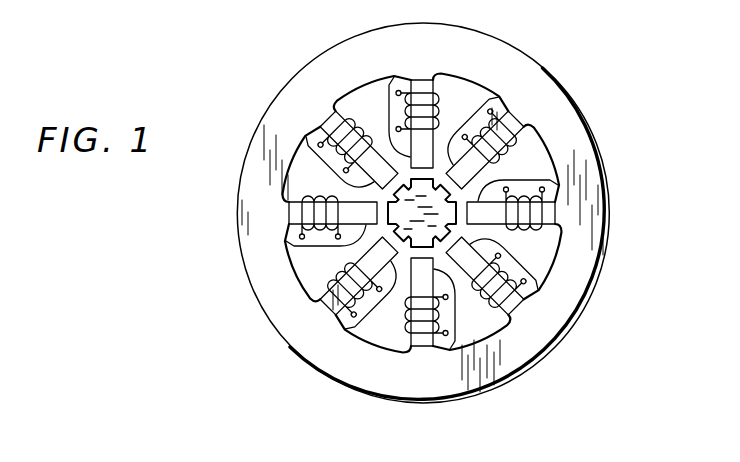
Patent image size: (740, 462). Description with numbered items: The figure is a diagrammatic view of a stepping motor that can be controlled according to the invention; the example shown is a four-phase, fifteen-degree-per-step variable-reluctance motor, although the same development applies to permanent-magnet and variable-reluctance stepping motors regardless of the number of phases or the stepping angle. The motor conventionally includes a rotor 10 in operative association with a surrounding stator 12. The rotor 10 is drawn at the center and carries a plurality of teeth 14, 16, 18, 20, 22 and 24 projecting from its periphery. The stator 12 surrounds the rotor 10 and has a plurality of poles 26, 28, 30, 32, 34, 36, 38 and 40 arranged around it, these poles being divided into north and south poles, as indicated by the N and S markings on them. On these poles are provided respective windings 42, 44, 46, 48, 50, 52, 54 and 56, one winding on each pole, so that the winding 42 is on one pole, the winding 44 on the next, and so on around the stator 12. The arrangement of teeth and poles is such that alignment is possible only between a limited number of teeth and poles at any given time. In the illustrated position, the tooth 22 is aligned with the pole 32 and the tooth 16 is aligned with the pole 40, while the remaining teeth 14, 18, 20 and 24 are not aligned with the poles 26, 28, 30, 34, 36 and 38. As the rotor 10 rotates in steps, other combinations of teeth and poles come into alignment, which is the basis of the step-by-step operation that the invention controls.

The rotor 10 is at (455, 199).
The stator 12 is at (608, 183).
The tooth 14 is at (443, 226).
The tooth 16 is at (352, 300).
The tooth 18 is at (363, 240).
The tooth 20 is at (390, 197).
The tooth 22 is at (407, 160).
The tooth 24 is at (477, 173).
The pole 26 is at (348, 288).
The pole 28 is at (320, 224).
The pole 30 is at (353, 137).
The pole 32 is at (388, 85).
The pole 34 is at (465, 122).
The pole 36 is at (542, 197).
The pole 38 is at (451, 260).
The pole 40 is at (403, 328).
The winding 42 is at (307, 290).
The winding 44 is at (289, 196).
The winding 46 is at (352, 97).
The winding 48 is at (448, 75).
The winding 50 is at (528, 136).
The winding 52 is at (598, 272).
The winding 54 is at (493, 315).
The winding 56 is at (408, 327).